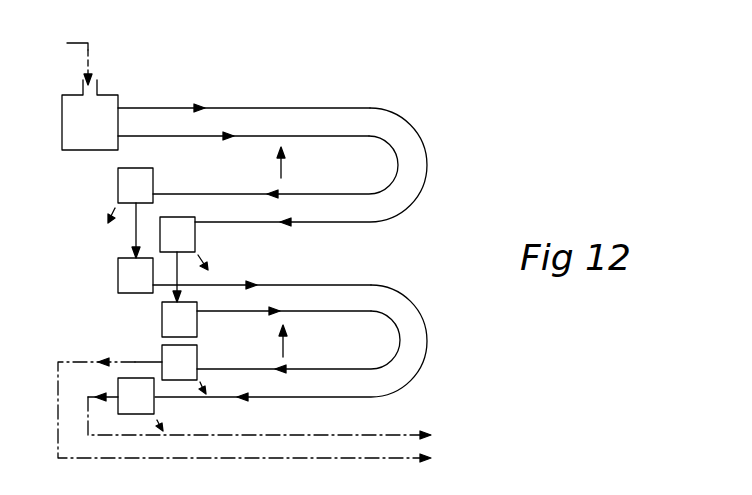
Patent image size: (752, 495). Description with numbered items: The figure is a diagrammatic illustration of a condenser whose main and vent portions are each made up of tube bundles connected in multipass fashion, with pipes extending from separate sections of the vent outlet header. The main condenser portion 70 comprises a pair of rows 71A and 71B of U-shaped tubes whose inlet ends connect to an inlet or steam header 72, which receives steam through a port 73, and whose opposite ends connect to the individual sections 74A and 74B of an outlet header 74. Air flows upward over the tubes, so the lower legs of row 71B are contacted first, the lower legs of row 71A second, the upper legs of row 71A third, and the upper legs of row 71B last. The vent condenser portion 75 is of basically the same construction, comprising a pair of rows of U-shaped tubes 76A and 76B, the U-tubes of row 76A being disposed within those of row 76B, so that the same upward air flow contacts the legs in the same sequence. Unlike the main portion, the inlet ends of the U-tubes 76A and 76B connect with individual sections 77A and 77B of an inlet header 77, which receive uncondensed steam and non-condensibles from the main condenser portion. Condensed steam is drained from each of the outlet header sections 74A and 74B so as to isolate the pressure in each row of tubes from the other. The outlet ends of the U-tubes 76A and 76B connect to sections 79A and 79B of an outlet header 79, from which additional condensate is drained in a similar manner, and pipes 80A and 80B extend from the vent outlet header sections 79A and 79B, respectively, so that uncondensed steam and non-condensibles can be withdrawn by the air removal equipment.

The main condenser portion 70 is at (270, 106).
The row of U-shaped tubes 71A is at (150, 137).
The row of U-shaped tubes 71B is at (135, 110).
The inlet or steam header 72 is at (67, 127).
The port 73 is at (83, 90).
The outlet header 74 is at (150, 235).
The outlet header section 74A is at (118, 180).
The outlet header section 74B is at (195, 238).
The vent condenser portion 75 is at (343, 281).
The row of U-shaped tubes 76A is at (305, 313).
The row of U-shaped tubes 76B is at (275, 283).
The inlet header 77 is at (129, 297).
The inlet header section 77A is at (162, 318).
The inlet header section 77B is at (118, 278).
The outlet header 79 is at (175, 386).
The outlet header section 79A is at (187, 356).
The outlet header section 79B is at (147, 407).
The pipe 80A is at (260, 458).
The pipe 80B is at (350, 433).